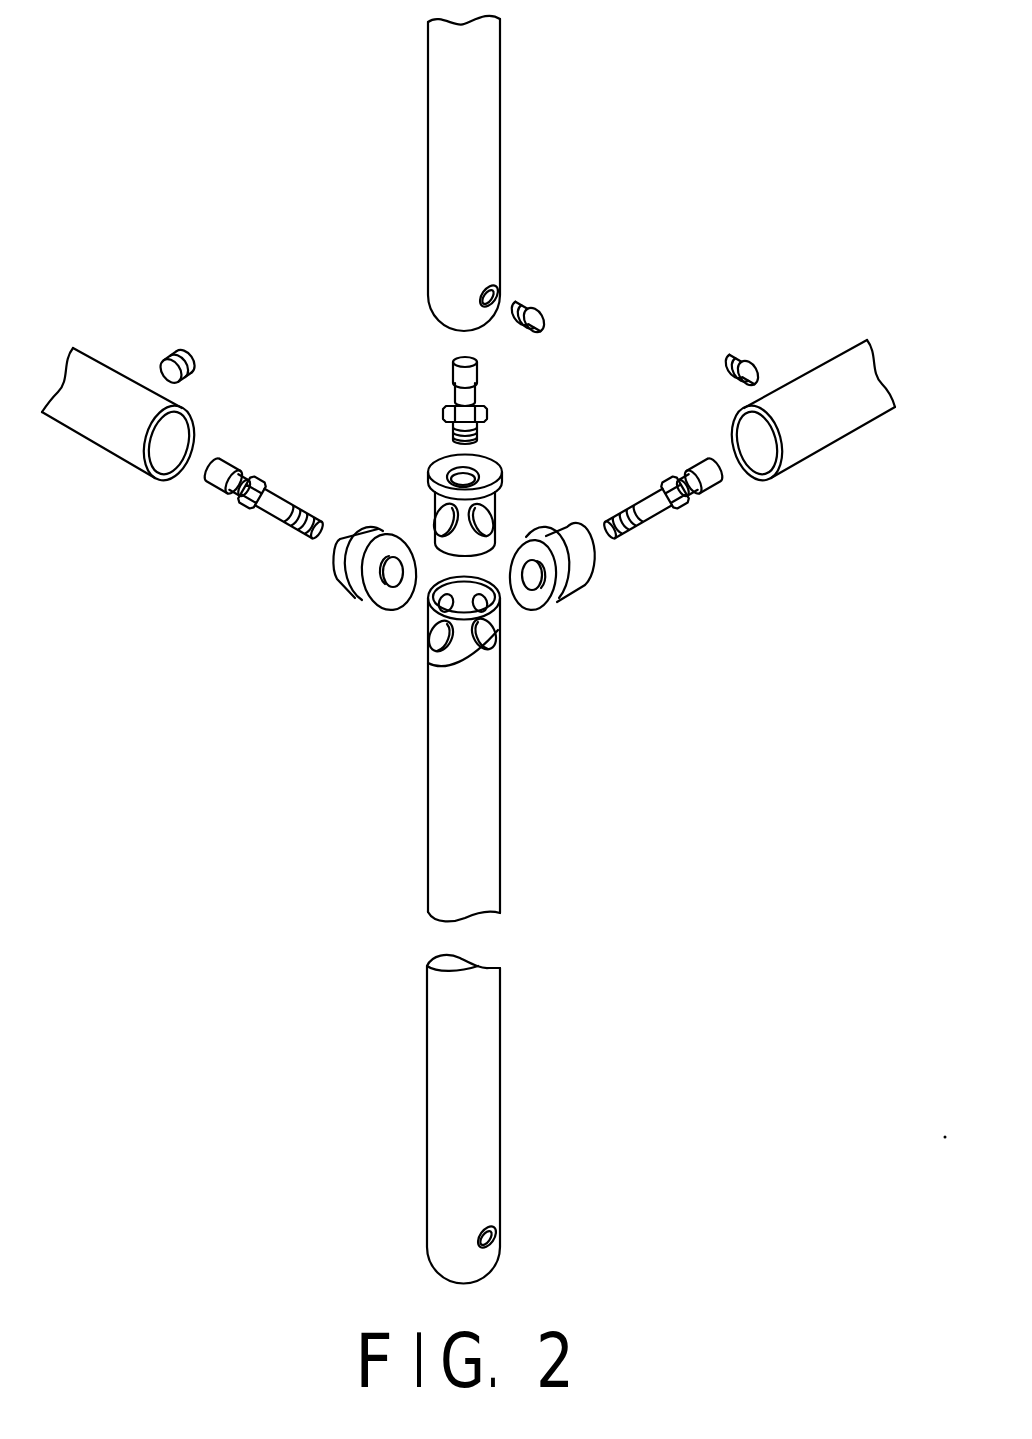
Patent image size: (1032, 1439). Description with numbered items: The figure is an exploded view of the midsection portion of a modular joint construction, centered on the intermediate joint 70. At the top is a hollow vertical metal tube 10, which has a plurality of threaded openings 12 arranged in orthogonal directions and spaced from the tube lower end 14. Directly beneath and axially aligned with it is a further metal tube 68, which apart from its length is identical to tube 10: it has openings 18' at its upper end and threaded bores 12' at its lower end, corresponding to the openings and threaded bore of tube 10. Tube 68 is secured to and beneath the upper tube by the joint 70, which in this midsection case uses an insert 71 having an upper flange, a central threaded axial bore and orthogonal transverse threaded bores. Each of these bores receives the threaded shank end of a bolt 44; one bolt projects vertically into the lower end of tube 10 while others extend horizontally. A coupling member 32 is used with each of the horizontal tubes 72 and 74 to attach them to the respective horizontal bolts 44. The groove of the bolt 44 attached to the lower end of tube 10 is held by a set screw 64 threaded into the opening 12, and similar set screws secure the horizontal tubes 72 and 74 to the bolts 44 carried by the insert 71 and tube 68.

The metal tube 10 is at (502, 166).
The threaded opening 12 is at (527, 263).
The threaded bore 12' is at (513, 1119).
The tube lower end 14 is at (441, 286).
The openings 18' is at (416, 637).
The coupling member 32 is at (338, 573).
The bolt 44 is at (443, 407).
The set screw 64 is at (548, 317).
The metal tube 68 is at (448, 817).
The joint 70 is at (660, 653).
The insert 71 is at (500, 470).
The horizontal tube 72 is at (102, 446).
The horizontal tube 74 is at (830, 448).